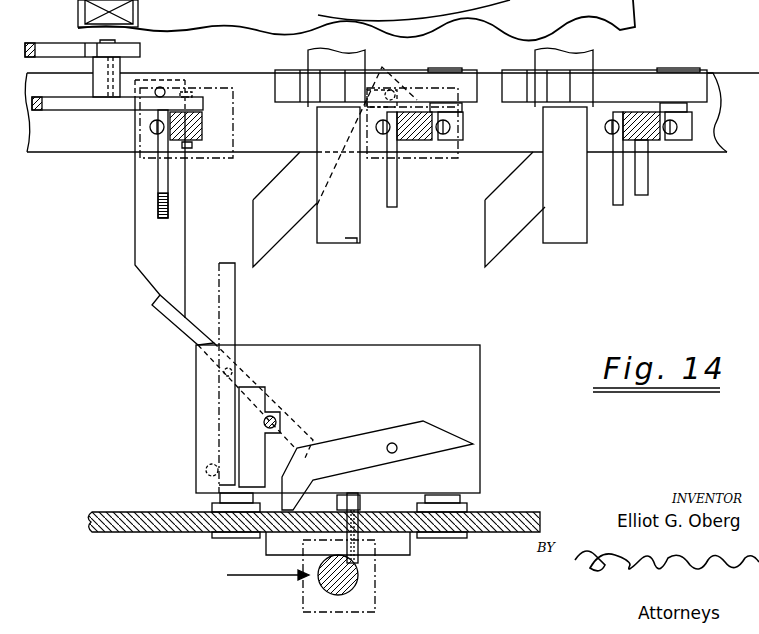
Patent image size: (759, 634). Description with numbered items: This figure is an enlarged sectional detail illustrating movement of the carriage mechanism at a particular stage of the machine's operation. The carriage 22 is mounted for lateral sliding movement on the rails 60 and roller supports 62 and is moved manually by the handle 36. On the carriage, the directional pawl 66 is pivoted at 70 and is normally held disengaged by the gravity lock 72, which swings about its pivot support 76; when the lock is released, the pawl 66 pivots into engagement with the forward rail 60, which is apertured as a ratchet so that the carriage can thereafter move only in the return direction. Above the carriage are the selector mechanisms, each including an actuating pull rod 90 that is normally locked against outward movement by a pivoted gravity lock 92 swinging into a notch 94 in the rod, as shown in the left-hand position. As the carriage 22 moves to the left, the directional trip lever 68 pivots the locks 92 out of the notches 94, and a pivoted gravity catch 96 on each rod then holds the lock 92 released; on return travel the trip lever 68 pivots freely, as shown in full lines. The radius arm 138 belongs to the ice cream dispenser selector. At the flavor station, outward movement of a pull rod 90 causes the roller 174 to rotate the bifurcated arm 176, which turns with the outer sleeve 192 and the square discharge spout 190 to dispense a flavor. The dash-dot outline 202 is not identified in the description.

The carriage 22 is at (360, 377).
The handle 36 is at (348, 574).
The rails 60 is at (125, 514).
The roller supports 62 is at (230, 540).
The directional pawl 66 is at (354, 461).
The directional trip lever 68 is at (173, 315).
The pivot 70 is at (392, 448).
The gravity lock 72 is at (260, 458).
The pivot support 76 is at (277, 422).
The actuating pull rod 90 is at (203, 133).
The pivoted gravity lock 92 is at (147, 228).
The notch 94 is at (178, 150).
The pivoted gravity catch 96 is at (163, 181).
The radius arm 138 is at (62, 50).
The roller 174 is at (445, 67).
The bifurcated arm 176 is at (410, 78).
The discharge spout 190 is at (345, 240).
The outer sleeve 192 is at (346, 66).
The clamp assembly 202 is at (235, 133).